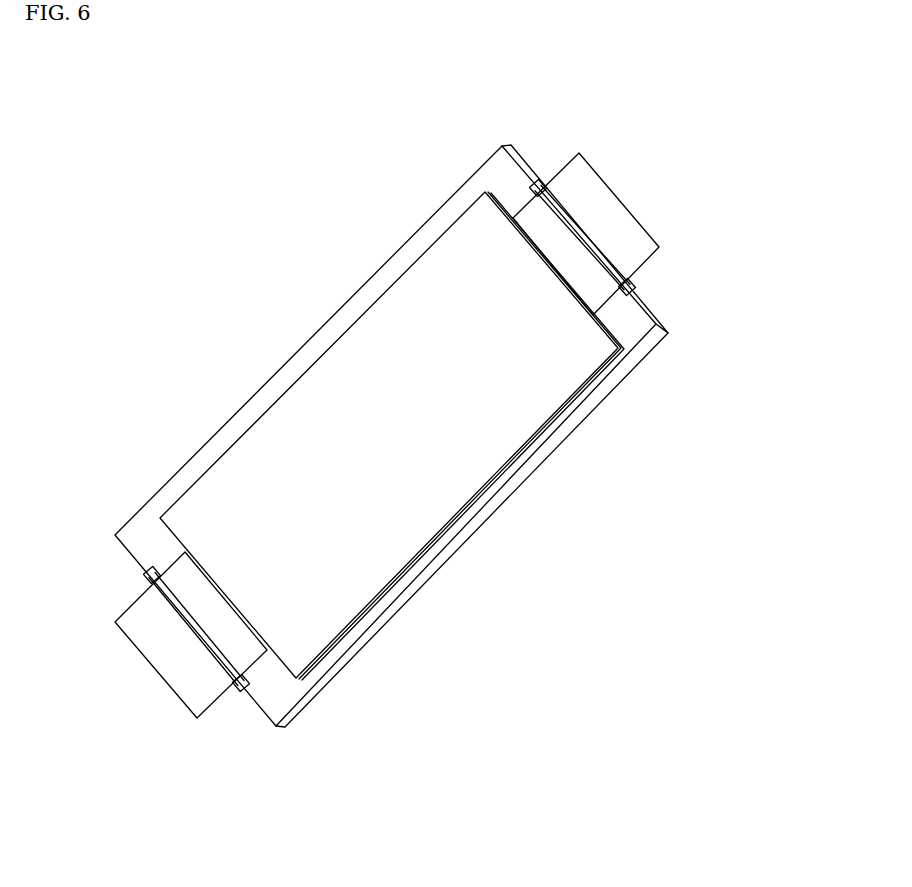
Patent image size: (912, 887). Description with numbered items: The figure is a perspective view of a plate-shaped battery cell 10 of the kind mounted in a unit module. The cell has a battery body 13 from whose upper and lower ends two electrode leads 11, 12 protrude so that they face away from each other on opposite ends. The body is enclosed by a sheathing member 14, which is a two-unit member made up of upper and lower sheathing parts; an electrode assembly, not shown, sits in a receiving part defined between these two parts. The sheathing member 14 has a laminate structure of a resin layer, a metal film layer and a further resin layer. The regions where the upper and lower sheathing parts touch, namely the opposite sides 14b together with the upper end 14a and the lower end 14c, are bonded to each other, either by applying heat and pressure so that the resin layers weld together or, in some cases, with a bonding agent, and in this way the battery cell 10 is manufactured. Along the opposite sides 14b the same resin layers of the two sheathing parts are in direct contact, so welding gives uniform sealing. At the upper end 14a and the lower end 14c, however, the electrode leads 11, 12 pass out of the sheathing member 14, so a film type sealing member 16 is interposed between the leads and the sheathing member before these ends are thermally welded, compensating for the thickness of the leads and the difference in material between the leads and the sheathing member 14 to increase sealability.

The battery cell 10 is at (138, 131).
The electrode lead 11 is at (174, 668).
The electrode lead 12 is at (623, 207).
The battery body 13 is at (335, 372).
The sheathing member 14 is at (487, 158).
The upper end 14a is at (145, 533).
The opposite sides 14b is at (493, 498).
The lower end 14c is at (648, 333).
The film type sealing member 16 is at (541, 183).